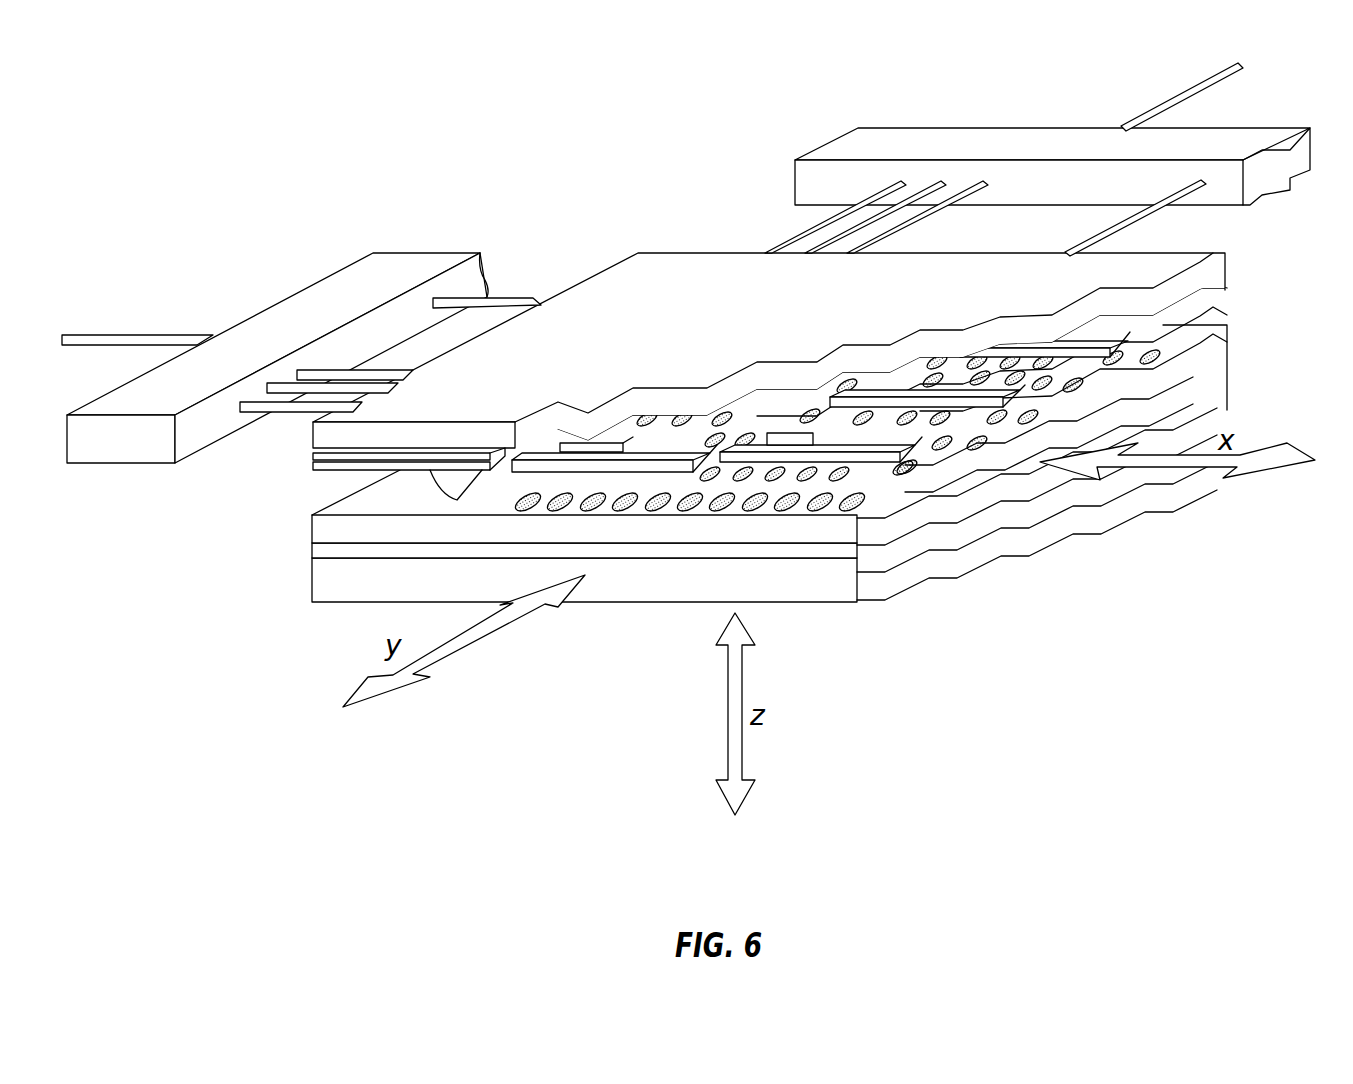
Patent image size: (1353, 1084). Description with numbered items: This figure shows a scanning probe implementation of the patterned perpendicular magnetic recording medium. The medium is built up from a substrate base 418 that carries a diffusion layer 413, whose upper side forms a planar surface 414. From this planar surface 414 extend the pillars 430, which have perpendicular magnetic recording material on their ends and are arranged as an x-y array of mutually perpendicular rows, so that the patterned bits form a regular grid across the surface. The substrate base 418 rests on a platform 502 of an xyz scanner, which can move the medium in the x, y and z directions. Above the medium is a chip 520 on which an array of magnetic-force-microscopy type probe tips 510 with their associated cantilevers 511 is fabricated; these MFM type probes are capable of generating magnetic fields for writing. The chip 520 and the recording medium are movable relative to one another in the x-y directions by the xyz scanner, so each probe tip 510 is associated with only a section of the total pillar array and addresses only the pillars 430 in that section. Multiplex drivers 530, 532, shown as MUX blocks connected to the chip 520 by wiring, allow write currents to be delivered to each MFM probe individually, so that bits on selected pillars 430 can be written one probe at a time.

The platform 502 is at (360, 585).
The substrate base 418 is at (328, 550).
The diffusion layer 413 is at (323, 528).
The planar surface 414 is at (352, 507).
The pillars 430 is at (783, 505).
The probe tips 510 is at (1063, 365).
The cantilevers 511 is at (637, 450).
The chip 520 is at (622, 282).
The multiplex driver 530 is at (295, 312).
The multiplex driver 532 is at (1243, 128).